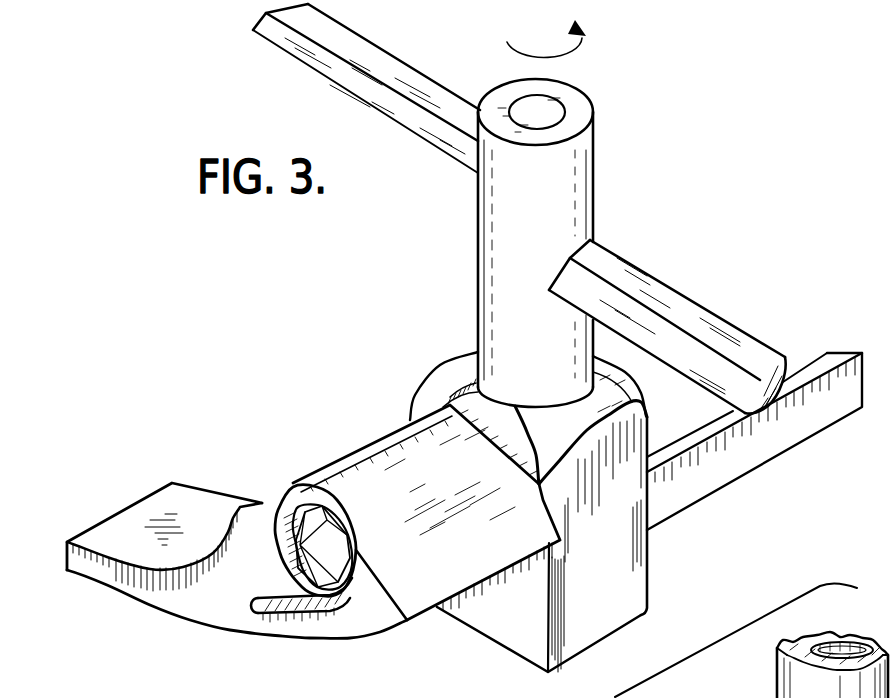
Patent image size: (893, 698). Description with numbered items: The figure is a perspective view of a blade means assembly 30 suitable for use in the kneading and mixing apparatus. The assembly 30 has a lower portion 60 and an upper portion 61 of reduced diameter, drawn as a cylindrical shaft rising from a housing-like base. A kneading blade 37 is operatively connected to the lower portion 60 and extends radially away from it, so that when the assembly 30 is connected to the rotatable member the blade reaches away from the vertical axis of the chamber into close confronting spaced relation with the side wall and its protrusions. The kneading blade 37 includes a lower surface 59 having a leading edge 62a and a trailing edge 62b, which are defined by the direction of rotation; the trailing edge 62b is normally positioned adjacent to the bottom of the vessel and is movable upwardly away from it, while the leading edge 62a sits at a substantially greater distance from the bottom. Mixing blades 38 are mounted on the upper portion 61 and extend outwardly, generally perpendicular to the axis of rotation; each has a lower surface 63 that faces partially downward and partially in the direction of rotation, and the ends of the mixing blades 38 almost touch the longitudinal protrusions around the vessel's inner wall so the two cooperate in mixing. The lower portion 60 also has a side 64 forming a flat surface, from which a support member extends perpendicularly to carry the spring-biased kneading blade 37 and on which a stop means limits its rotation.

The blade means assembly 30 is at (568, 186).
The kneading blade 37 is at (208, 604).
The mixing blades 38 is at (258, 10).
The lower surface 59 is at (365, 640).
The lower portion 60 is at (613, 610).
The upper portion 61 is at (503, 307).
The leading edge 62a is at (433, 613).
The trailing edge 62b is at (67, 574).
The lower surface 63 is at (347, 92).
The side 64 is at (500, 634).